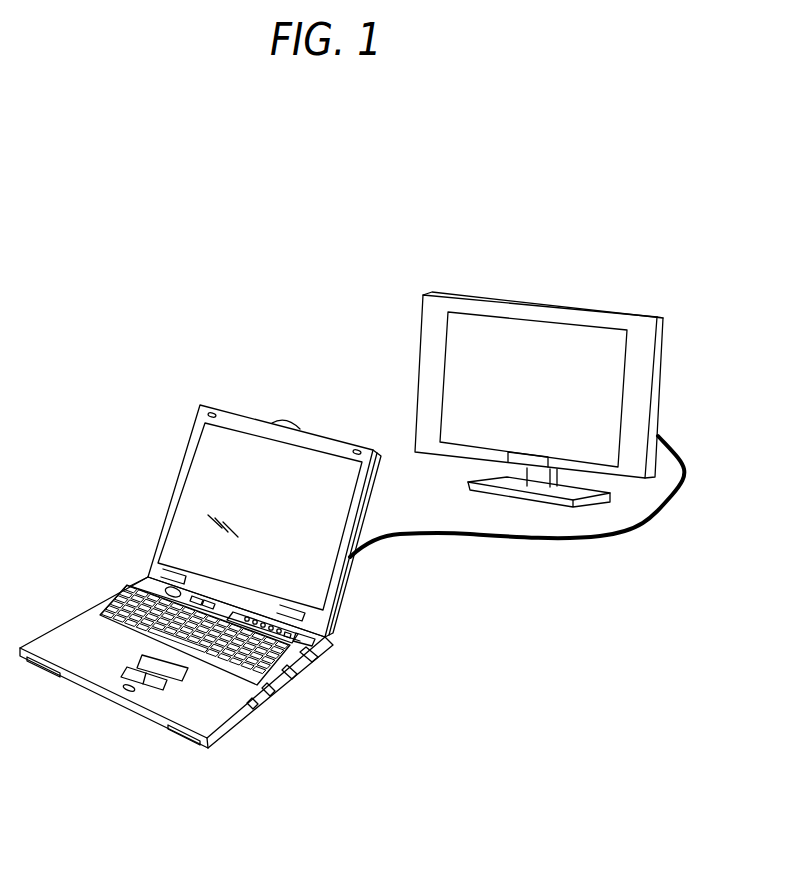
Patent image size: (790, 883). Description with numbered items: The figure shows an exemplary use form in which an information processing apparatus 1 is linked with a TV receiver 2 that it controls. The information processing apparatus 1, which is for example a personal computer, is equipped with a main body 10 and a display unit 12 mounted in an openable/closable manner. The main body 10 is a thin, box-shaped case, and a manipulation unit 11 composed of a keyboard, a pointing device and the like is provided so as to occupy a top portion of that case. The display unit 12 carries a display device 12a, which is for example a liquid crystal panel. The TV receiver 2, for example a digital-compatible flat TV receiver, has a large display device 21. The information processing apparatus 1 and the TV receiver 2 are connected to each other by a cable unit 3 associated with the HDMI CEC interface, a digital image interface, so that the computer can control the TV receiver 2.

The information processing apparatus 1 is at (348, 291).
The main body 10 is at (60, 622).
The manipulation unit 11 is at (127, 590).
The display unit 12 is at (309, 421).
The display device 12a is at (250, 462).
The TV receiver 2 is at (578, 305).
The large display device 21 is at (493, 340).
The cable unit 3 is at (650, 528).